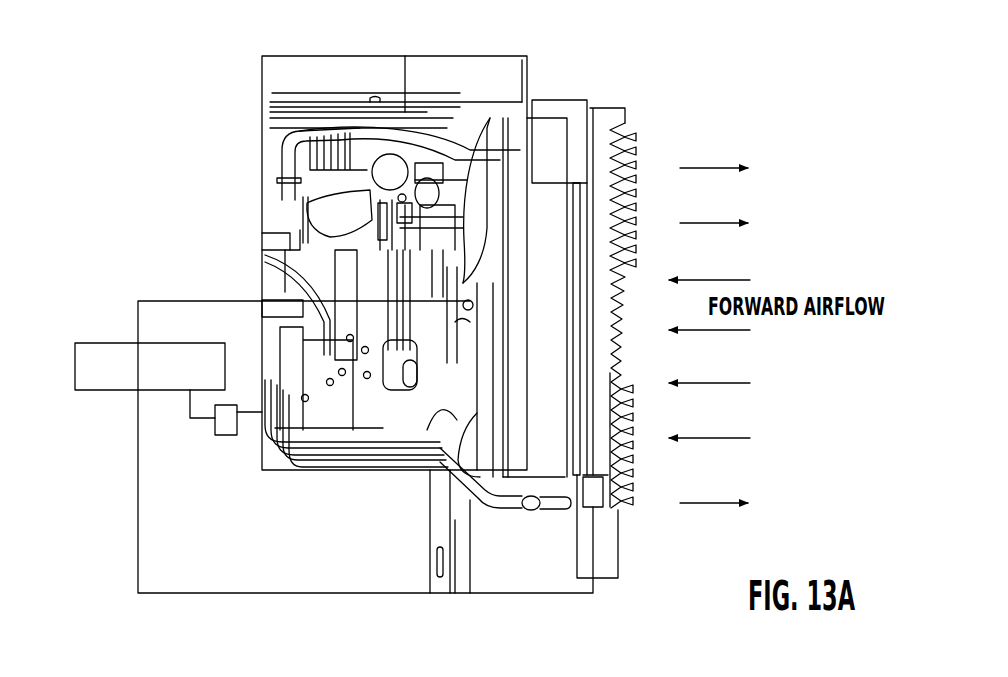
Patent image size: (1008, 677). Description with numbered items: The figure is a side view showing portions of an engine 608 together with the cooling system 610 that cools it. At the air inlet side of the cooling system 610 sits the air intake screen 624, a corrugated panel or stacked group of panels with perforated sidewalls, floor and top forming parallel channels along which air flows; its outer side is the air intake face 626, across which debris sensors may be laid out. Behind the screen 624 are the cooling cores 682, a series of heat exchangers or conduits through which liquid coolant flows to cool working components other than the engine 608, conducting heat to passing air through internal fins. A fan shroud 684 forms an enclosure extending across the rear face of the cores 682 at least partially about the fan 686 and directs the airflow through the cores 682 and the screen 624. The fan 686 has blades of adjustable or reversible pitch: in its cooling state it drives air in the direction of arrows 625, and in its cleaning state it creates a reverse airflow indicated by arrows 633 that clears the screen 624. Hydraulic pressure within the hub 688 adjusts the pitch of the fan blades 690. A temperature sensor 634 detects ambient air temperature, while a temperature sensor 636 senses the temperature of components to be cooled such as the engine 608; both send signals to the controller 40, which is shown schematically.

The controller 40 is at (75, 357).
The engine 608 is at (258, 220).
The cooling system 610 is at (600, 94).
The air intake screen 624 is at (627, 130).
The arrows 625 is at (722, 280).
The air intake face 626 is at (640, 475).
The arrows 633 is at (722, 168).
The temperature sensor 634 is at (618, 527).
The temperature sensor 636 is at (225, 437).
The cooling core 682 is at (547, 112).
The fan shroud 684 is at (480, 126).
The fan 686 is at (462, 322).
The hub 688 is at (468, 302).
The fan blades 690 is at (462, 407).